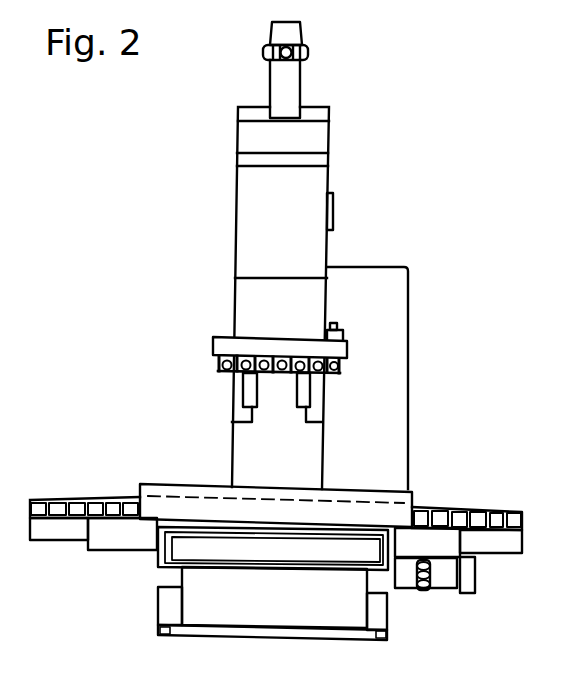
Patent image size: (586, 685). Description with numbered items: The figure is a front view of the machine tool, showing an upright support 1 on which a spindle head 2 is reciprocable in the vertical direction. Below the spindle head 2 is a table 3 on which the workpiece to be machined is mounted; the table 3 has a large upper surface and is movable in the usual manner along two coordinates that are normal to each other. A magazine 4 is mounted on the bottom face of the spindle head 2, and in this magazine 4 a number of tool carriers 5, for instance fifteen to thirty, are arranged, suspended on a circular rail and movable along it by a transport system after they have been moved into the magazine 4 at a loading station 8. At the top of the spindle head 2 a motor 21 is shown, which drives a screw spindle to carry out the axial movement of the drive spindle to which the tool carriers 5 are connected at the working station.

The upright support 1 is at (314, 301).
The spindle head 2 is at (318, 310).
The table 3 is at (399, 490).
The magazine 4 is at (347, 349).
The tool carriers 5 is at (228, 373).
The loading station 8 is at (343, 336).
The motor 21 is at (292, 84).